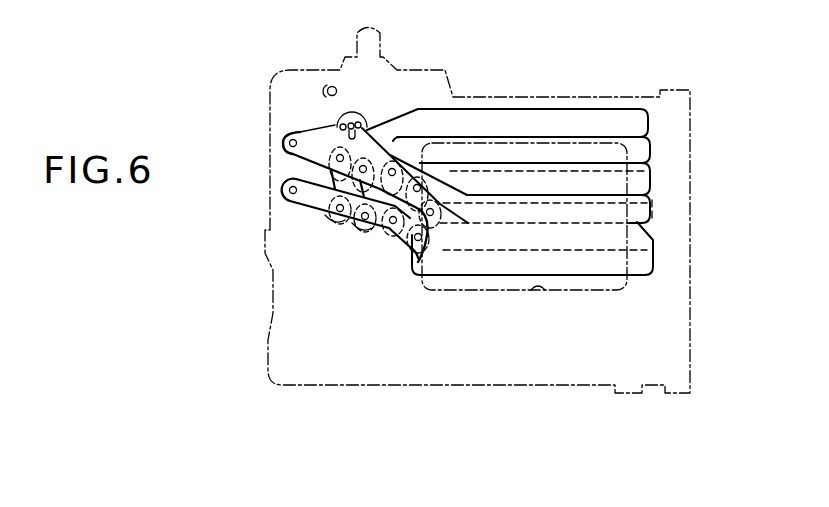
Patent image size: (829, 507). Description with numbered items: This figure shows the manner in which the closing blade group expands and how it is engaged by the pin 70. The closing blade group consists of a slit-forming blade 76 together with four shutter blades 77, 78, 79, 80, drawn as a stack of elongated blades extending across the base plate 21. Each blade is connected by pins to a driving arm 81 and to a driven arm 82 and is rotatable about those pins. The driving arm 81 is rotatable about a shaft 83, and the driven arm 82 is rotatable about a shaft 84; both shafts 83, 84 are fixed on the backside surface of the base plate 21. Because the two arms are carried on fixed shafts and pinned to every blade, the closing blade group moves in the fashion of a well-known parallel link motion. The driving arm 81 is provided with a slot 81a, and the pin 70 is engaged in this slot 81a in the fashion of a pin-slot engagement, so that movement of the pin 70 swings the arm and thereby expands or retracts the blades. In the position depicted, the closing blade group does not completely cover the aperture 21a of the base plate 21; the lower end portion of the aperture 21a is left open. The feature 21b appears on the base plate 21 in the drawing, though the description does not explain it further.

The base plate 21 is at (467, 66).
The aperture 21a is at (540, 293).
The housing hook 21b is at (335, 87).
The pin 70 is at (347, 123).
The slit-forming blade 76 is at (643, 266).
The shutter blade 77 is at (645, 223).
The shutter blade 78 is at (643, 189).
The shutter blade 79 is at (643, 160).
The shutter blade 80 is at (637, 125).
The driving arm 81 is at (307, 127).
The slot 81a is at (333, 127).
The driven arm 82 is at (302, 215).
The shaft 83 is at (289, 142).
The shaft 84 is at (289, 190).